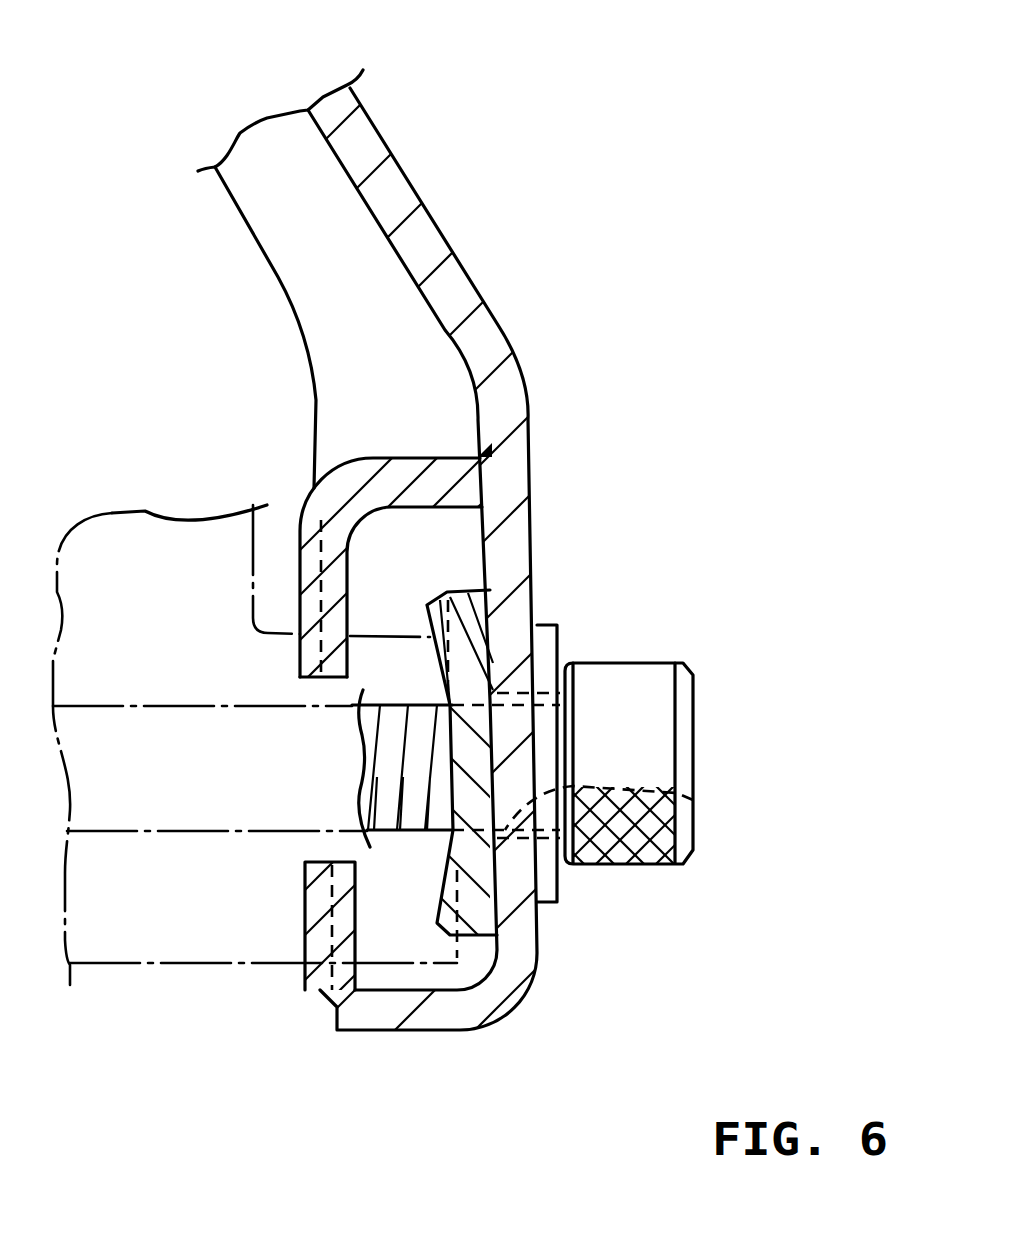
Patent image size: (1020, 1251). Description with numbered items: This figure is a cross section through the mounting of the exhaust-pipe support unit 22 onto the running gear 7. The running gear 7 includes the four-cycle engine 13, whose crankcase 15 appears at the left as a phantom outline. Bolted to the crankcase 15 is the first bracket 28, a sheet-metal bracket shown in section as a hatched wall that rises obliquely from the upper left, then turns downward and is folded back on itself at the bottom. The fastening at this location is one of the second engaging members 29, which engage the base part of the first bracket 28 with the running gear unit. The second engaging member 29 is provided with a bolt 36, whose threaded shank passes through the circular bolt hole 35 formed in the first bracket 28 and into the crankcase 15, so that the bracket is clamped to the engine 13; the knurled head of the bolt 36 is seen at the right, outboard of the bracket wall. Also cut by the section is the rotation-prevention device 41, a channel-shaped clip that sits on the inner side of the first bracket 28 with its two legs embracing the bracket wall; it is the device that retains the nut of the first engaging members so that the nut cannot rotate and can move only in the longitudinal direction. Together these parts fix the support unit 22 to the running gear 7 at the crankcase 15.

The running gear 7 is at (680, 62).
The support unit 22 is at (642, 245).
The first bracket 28 is at (442, 213).
The rotation-prevention device 41 is at (403, 458).
The second engaging member 29 is at (697, 684).
The bolt 36 is at (645, 750).
The circular bolt hole 35 is at (693, 800).
The four-cycle engine 13 is at (104, 982).
The crankcase 15 is at (202, 965).